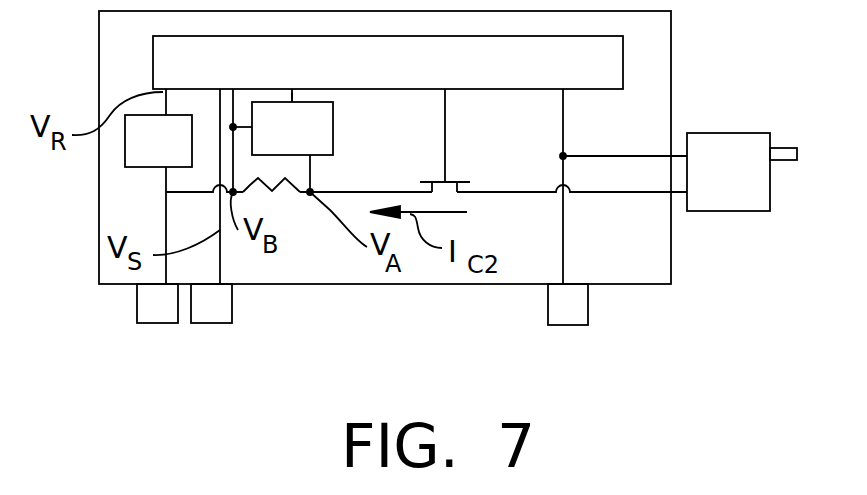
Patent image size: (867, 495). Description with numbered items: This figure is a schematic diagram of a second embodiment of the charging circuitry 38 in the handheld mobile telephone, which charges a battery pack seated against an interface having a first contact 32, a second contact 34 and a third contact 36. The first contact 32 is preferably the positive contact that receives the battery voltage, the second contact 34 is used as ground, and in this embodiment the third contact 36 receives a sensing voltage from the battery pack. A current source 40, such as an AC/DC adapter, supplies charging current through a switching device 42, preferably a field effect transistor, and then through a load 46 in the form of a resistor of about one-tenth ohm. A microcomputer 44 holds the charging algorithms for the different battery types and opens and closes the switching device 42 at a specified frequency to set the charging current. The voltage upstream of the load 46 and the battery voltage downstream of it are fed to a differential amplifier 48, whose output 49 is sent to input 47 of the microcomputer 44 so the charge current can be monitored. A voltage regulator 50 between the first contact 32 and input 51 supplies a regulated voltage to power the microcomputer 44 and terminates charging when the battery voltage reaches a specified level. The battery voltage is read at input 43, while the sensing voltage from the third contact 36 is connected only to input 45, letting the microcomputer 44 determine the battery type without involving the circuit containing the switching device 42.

The first contact 32 is at (142, 304).
The second contact 34 is at (550, 305).
The third contact 36 is at (222, 300).
The charging circuitry 38 is at (633, 115).
The current source 40 is at (720, 200).
The switching device 42 is at (448, 180).
The input 43 is at (235, 89).
The microcomputer 44 is at (622, 67).
The input 45 is at (221, 89).
The load 46 is at (297, 190).
The input 47 is at (293, 89).
The differential amplifier 48 is at (310, 130).
The output 49 is at (293, 94).
The voltage regulator 50 is at (128, 155).
The input 51 is at (166, 89).